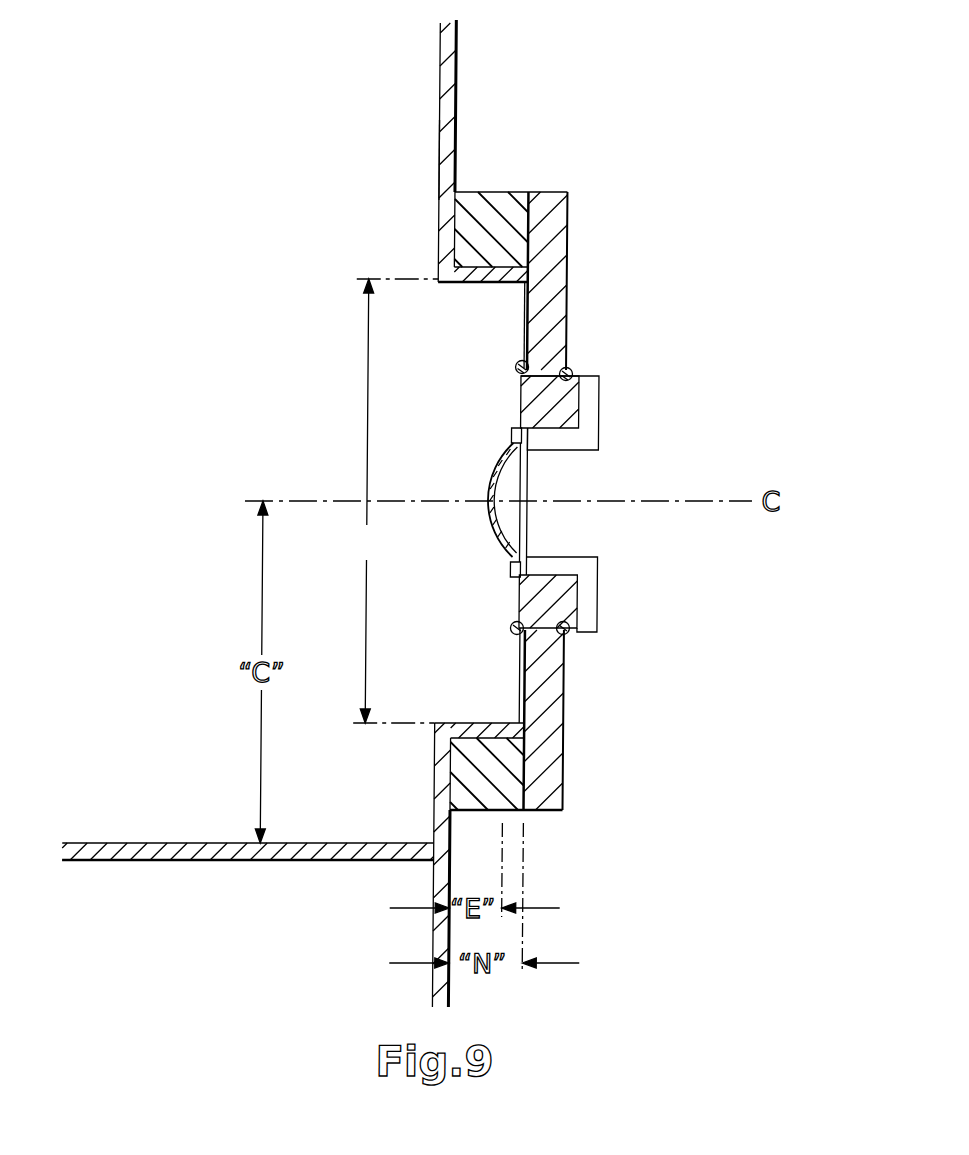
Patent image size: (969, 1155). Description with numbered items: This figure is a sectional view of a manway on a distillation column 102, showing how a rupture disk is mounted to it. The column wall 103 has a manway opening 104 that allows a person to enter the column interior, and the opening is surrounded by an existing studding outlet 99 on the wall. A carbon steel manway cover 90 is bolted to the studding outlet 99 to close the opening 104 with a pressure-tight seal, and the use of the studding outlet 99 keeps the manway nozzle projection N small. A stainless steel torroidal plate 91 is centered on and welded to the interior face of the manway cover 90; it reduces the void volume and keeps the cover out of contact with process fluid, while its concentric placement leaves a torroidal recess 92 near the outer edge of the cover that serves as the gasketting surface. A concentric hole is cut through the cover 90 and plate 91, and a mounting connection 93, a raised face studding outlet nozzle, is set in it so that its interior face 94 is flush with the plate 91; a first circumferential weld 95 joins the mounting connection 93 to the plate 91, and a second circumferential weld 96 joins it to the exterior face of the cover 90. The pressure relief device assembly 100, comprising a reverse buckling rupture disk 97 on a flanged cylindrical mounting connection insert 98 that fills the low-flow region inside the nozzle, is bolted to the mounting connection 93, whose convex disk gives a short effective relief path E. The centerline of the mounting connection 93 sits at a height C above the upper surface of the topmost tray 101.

The manway cover 90 is at (550, 228).
The torroidal plate 91 is at (523, 300).
The torroidal recess 92 is at (526, 178).
The mounting connection 93 is at (548, 602).
The interior face 94 is at (506, 403).
The first circumferential weld 95 is at (516, 362).
The second circumferential weld 96 is at (570, 368).
The rupture disk 97 is at (489, 487).
The mounting connection insert 98 is at (588, 585).
The studding outlet 99 is at (498, 225).
The pressure relief device assembly 100 is at (620, 414).
The topmost tray 101 is at (202, 829).
The distillation column 102 is at (467, 57).
The column wall 103 is at (436, 155).
The manway opening 104 is at (388, 501).